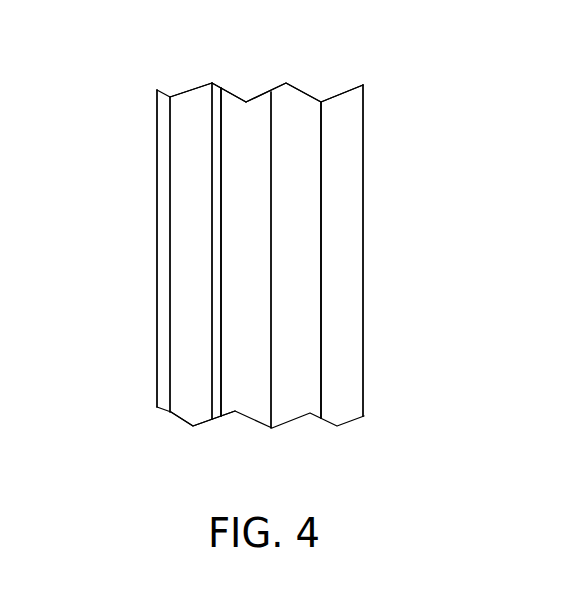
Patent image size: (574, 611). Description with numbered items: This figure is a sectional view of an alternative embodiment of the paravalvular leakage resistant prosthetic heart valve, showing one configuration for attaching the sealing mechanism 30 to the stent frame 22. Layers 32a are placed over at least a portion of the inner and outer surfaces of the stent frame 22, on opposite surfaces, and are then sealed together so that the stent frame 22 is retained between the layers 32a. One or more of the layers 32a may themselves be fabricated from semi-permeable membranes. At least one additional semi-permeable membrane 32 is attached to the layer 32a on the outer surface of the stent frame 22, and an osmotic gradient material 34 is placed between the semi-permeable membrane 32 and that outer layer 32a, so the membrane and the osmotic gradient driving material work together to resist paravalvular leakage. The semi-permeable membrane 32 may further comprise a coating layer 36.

The sealing mechanism 30 is at (131, 47).
The stent frame 22 is at (307, 97).
The semi-permeable membrane 32 is at (190, 103).
The layers 32a is at (355, 350).
The osmotic gradient material 34 is at (215, 413).
The coating layer 36 is at (158, 213).